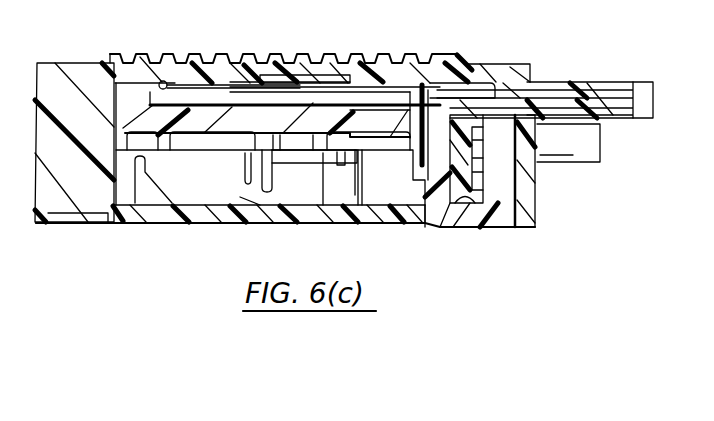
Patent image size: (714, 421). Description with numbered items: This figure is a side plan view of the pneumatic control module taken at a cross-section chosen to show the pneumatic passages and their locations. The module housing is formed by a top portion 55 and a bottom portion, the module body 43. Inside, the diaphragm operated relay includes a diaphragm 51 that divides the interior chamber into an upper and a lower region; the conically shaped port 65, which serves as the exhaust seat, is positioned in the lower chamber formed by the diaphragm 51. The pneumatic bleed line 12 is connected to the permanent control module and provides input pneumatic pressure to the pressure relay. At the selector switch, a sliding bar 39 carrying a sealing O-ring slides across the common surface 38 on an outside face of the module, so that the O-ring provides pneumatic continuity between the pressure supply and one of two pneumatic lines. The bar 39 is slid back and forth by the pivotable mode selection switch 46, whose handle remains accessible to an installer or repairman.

The pneumatic bleed line 12 is at (643, 55).
The common surface 38 is at (472, 197).
The sliding bar 39 is at (480, 180).
The module body 43 is at (502, 223).
The mode selection switch 46 is at (593, 148).
The diaphragm 51 is at (386, 88).
The top portion of the module 55 is at (462, 57).
The conically shaped port 65 is at (308, 110).